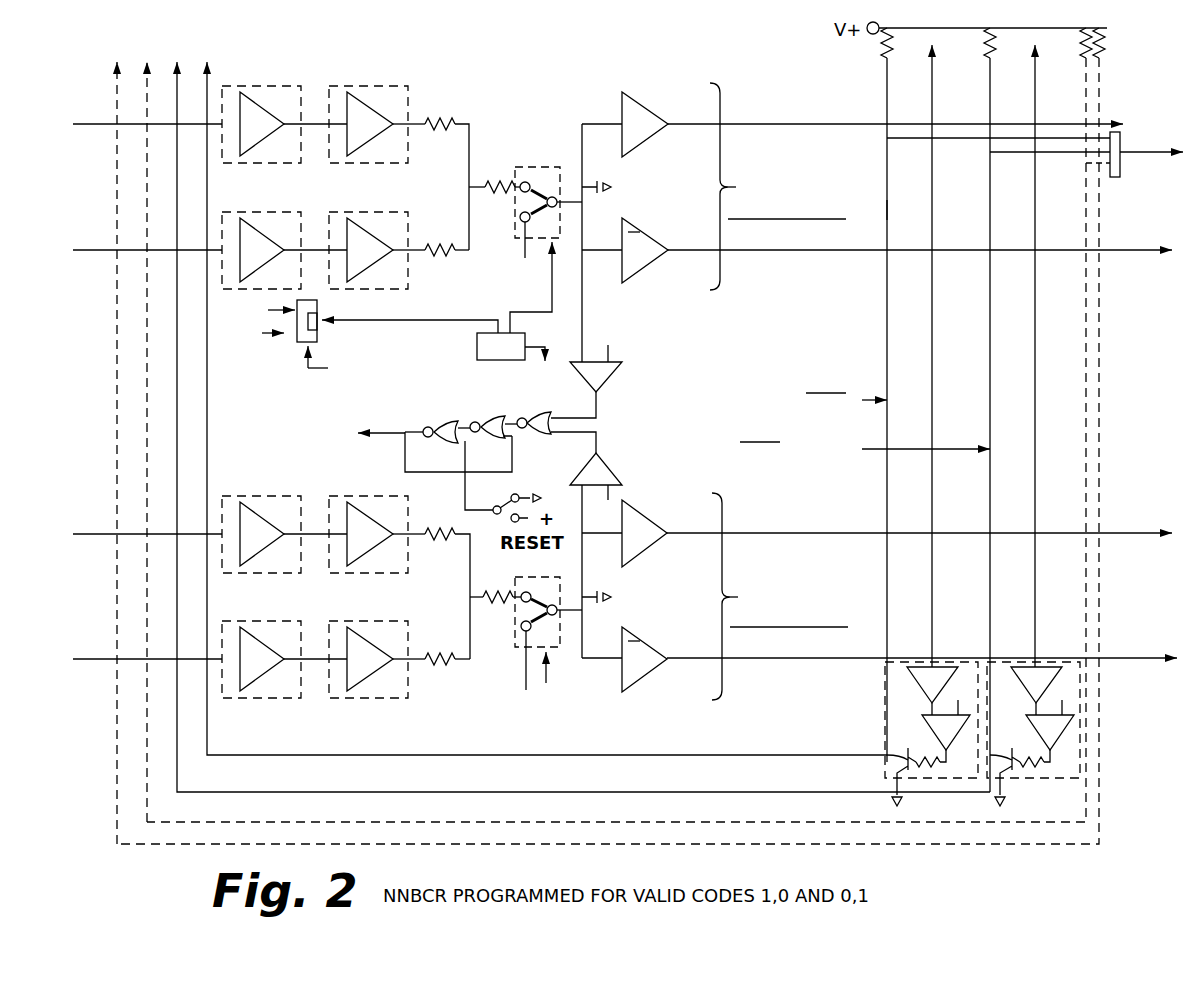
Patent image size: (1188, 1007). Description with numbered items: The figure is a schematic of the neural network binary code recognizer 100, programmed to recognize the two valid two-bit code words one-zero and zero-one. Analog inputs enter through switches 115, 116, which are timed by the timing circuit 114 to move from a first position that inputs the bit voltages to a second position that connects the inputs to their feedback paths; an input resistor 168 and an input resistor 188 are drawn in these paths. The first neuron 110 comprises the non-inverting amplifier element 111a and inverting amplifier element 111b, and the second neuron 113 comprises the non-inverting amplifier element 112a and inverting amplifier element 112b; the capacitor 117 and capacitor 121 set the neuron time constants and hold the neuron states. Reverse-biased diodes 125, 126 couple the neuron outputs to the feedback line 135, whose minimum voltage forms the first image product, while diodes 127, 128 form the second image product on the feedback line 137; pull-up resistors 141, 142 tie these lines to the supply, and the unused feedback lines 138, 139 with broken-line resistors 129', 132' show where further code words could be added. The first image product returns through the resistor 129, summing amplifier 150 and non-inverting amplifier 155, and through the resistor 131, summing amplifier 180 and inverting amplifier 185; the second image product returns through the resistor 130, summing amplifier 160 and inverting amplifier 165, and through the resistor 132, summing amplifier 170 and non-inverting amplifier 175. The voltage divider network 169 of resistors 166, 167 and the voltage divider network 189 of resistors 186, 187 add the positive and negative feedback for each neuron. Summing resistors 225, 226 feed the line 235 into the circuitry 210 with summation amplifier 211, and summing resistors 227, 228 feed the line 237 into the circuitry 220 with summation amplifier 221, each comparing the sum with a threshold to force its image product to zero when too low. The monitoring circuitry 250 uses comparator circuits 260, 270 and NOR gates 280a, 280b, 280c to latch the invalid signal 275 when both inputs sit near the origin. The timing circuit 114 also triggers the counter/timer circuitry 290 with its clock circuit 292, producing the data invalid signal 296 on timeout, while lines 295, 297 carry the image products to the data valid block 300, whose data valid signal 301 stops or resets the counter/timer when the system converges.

The neural network binary code recognizer 100 is at (544, 100).
The first neuron 110 is at (745, 186).
The non-inverting amplifier element 111a is at (661, 112).
The inverting amplifier element 111b is at (661, 237).
The non-inverting amplifier element 112a is at (642, 525).
The inverting amplifier element 112b is at (644, 648).
The second neuron 113 is at (747, 596).
The timing circuit 114 is at (442, 326).
The switch 115 is at (538, 165).
The switch 116 is at (556, 650).
The capacitor 117 is at (615, 184).
The capacitor 121 is at (603, 594).
The reverse-biased diode 125 is at (884, 120).
The reverse-biased diode 126 is at (884, 654).
The reverse-biased diode 127 is at (987, 246).
The reverse-biased diode 128 is at (987, 531).
The resistor 129 is at (480, 394).
The resistor 129' is at (111, 442).
The resistor 130 is at (172, 246).
The resistor 131 is at (202, 655).
The resistor 132 is at (147, 496).
The resistor 132' is at (108, 453).
The feedback line 135 is at (887, 208).
The feedback line 137 is at (989, 357).
The unused feedback line 138 is at (1085, 357).
The unused feedback line 139 is at (1100, 352).
The pull-up resistor 141 is at (889, 50).
The pull-up resistor 142 is at (991, 50).
The summing amplifier 150 is at (263, 85).
The non-inverting amplifier 155 is at (370, 85).
The summing amplifier 160 is at (263, 211).
The inverting amplifier 165 is at (370, 211).
The resistor 166 is at (427, 120).
The resistor 167 is at (443, 256).
The resistor 168 is at (495, 184).
The voltage divider network 169 is at (468, 121).
The summing amplifier 170 is at (263, 495).
The non-inverting amplifier 175 is at (370, 495).
The summing amplifier 180 is at (263, 620).
The inverting amplifier 185 is at (370, 620).
The resistor 186 is at (443, 540).
The resistor 187 is at (443, 665).
The resistor 188 is at (494, 594).
The voltage divider network 189 is at (470, 640).
The summing and comparing circuitry 210 is at (975, 662).
The summation amplifier 211 is at (920, 693).
The summing and comparing circuitry 220 is at (1077, 662).
The summation amplifier 221 is at (1024, 693).
The summing resistor 225 is at (929, 120).
The summing resistor 226 is at (929, 654).
The summing resistor 227 is at (1032, 246).
The summing resistor 228 is at (1032, 531).
The feedback line 235 is at (934, 368).
The feedback line 237 is at (1036, 578).
The monitoring circuitry 250 is at (603, 422).
The comparator circuit 260 is at (611, 383).
The comparator circuit 270 is at (611, 467).
The invalid signal 275 is at (385, 432).
The NOR gate 280a is at (436, 426).
The NOR gate 280b is at (488, 416).
The NOR gate 280c is at (544, 436).
The counter/timer circuitry 290 is at (261, 312).
The clock circuit 292 is at (319, 309).
The line 295 is at (319, 337).
The data invalid signal 296 is at (292, 333).
The line 297 is at (1057, 154).
The data valid output 300 is at (1120, 137).
The data valid signal 301 is at (306, 362).